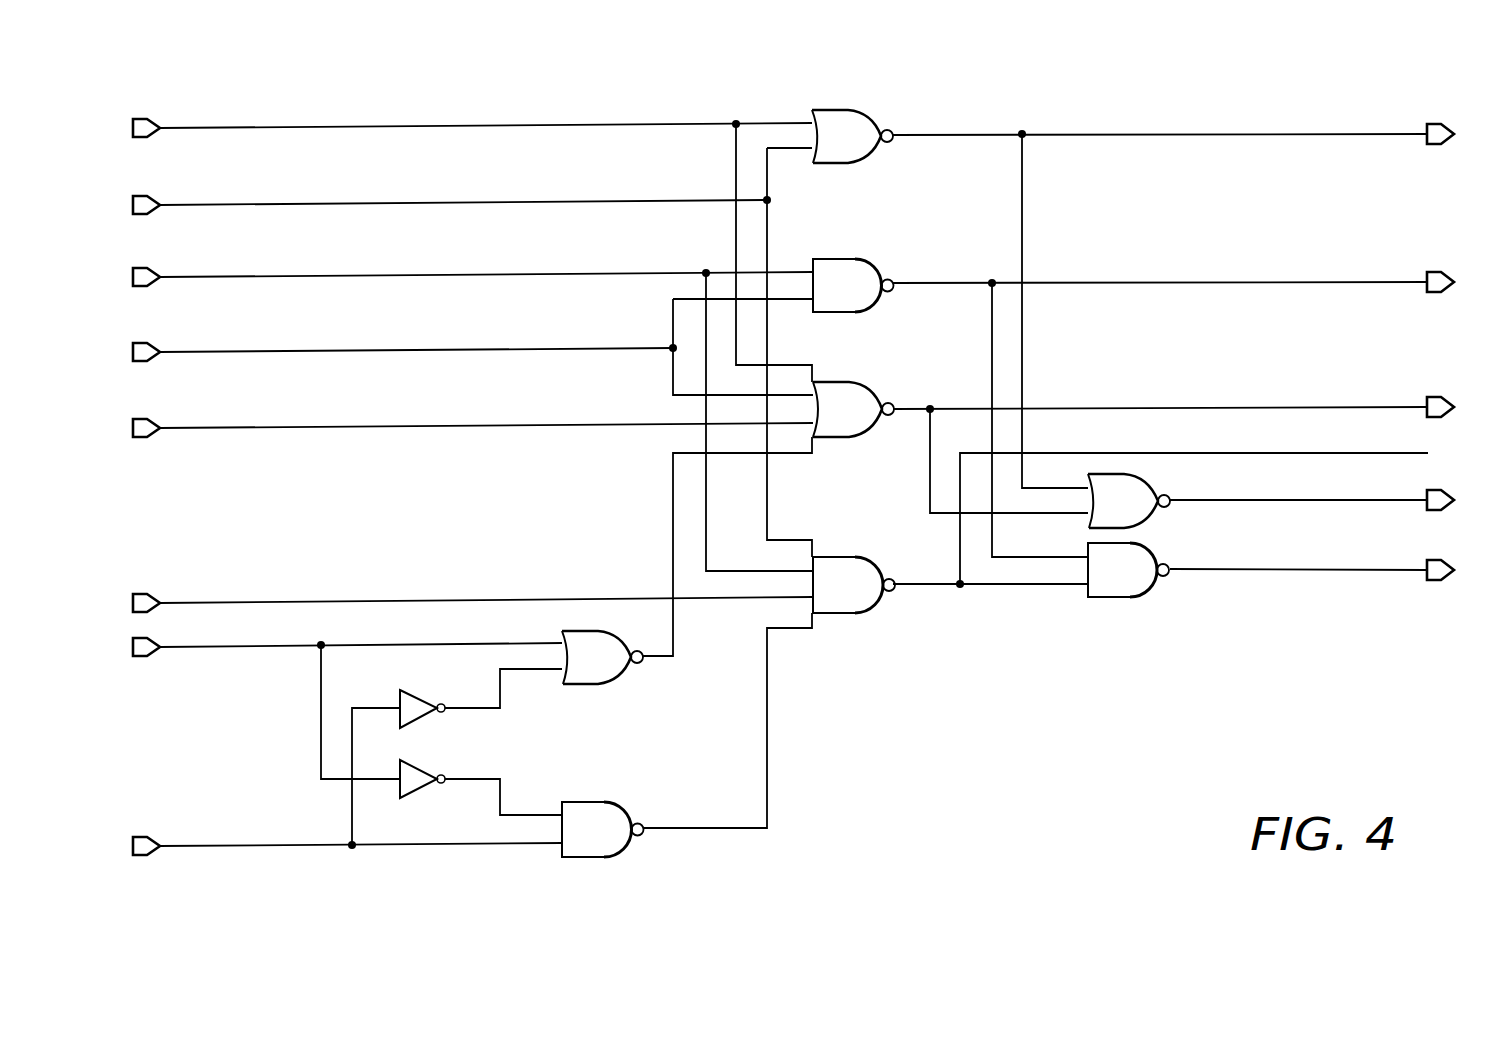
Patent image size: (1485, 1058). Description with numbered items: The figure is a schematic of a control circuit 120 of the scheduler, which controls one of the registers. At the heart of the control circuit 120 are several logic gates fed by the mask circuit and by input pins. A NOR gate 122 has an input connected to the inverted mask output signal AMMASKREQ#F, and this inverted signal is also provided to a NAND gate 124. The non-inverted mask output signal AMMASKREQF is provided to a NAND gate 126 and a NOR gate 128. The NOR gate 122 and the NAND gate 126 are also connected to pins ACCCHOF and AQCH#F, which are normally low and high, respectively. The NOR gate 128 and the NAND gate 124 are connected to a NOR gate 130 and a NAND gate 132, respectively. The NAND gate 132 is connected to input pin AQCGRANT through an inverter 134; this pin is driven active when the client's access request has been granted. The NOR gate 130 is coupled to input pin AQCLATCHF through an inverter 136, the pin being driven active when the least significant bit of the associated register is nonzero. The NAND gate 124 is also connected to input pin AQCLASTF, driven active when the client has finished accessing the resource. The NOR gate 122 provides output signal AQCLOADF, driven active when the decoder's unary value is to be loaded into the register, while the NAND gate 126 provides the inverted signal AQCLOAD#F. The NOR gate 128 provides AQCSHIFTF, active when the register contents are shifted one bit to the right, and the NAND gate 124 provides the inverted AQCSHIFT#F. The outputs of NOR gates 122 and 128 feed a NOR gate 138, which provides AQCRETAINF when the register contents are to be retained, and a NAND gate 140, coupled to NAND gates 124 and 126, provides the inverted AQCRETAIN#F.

The control circuit 120 is at (973, 655).
The NOR gate 122 is at (836, 110).
The NAND gate 124 is at (848, 557).
The NAND gate 126 is at (834, 259).
The NOR gate 128 is at (850, 382).
The NOR gate 130 is at (582, 684).
The NAND gate 132 is at (582, 802).
The inverter 134 is at (418, 798).
The inverter 136 is at (418, 690).
The NOR gate 138 is at (1133, 474).
The NAND gate 140 is at (1140, 543).